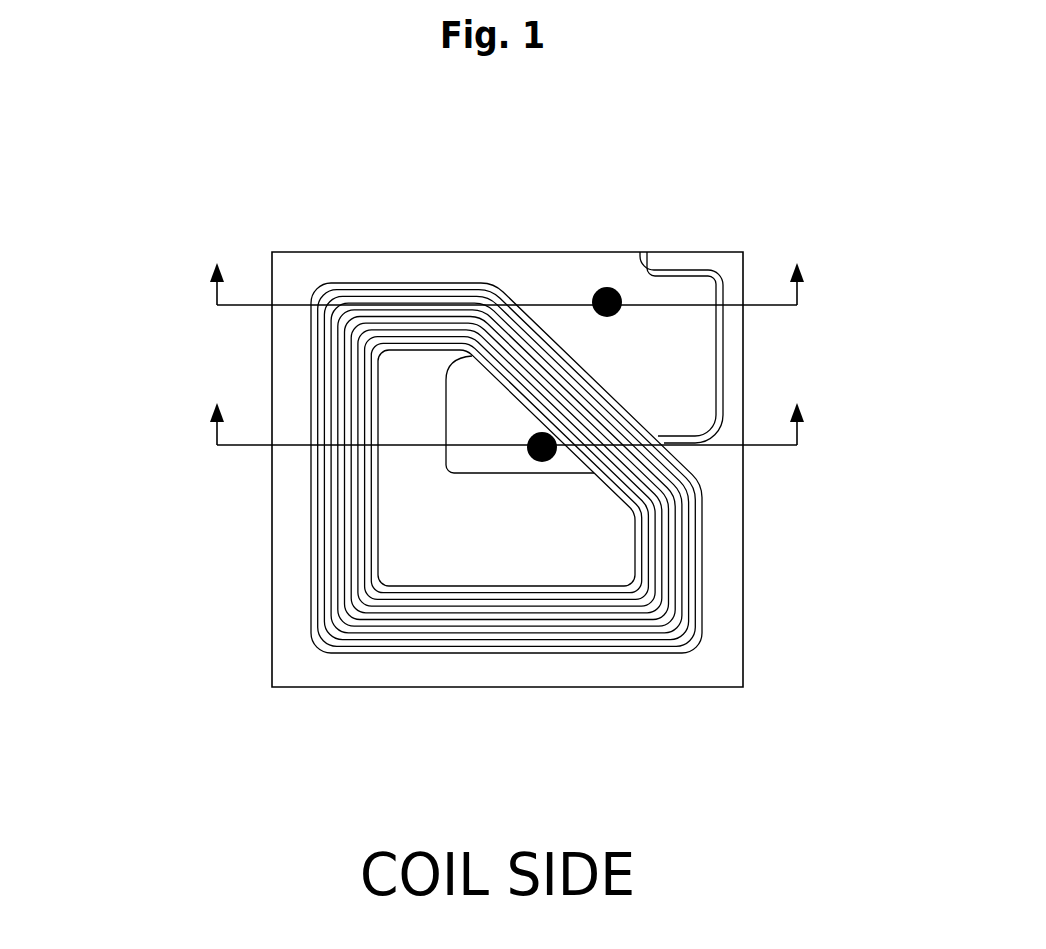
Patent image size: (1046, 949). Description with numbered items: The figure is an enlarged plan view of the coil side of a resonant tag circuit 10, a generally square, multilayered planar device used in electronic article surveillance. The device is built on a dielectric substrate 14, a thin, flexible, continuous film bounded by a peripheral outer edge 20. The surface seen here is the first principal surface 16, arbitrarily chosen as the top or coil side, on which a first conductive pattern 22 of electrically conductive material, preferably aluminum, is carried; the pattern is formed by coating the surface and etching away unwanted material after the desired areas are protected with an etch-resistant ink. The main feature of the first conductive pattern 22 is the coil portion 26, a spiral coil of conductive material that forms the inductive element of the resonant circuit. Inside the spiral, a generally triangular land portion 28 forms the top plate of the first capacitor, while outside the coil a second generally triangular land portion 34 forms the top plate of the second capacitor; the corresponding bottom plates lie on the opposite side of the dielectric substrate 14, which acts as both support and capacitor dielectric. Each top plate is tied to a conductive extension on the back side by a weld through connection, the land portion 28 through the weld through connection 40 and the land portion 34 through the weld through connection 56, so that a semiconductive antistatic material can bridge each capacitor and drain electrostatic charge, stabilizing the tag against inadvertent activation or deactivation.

The resonant tag circuit 10 is at (112, 357).
The dielectric substrate 14 is at (415, 490).
The first principal surface 16 is at (493, 565).
The peripheral outer edge 20 is at (265, 595).
The first conductive pattern 22 is at (449, 265).
The coil portion 26 is at (638, 525).
The land portion 28 is at (464, 410).
The land portion 34 is at (693, 337).
The weld through connection 40 is at (542, 462).
The weld through connection 56 is at (604, 288).